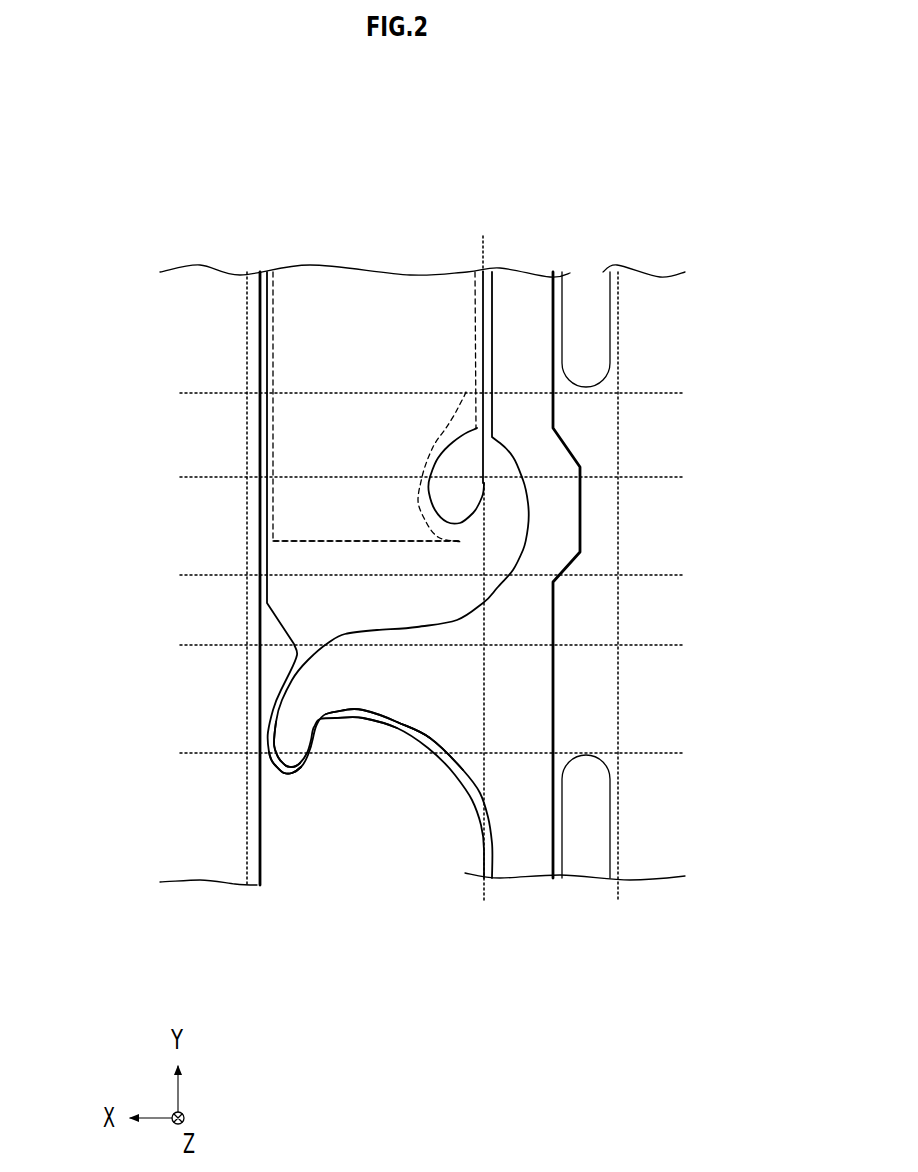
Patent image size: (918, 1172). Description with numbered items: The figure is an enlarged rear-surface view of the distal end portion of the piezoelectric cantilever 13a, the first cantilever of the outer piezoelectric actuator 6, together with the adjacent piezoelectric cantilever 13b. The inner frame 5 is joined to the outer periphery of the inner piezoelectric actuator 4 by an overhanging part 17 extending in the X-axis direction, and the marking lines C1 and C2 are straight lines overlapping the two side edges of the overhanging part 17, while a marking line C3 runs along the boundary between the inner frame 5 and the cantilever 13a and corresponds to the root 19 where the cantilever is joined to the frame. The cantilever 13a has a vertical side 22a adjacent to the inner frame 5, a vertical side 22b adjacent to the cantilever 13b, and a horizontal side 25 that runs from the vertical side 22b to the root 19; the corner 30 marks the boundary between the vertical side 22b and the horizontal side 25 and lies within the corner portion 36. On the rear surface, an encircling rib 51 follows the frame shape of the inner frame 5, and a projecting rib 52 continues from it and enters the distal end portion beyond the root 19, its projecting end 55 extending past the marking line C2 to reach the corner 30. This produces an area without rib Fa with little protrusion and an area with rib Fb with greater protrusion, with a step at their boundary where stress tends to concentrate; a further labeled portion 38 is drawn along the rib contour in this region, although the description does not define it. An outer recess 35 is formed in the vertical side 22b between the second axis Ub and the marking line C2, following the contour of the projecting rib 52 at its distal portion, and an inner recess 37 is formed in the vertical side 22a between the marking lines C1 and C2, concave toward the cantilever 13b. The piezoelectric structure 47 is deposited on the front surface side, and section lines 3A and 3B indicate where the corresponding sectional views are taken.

The piezoelectric cantilever 13a is at (327, 254).
The piezoelectric cantilever 13b is at (190, 254).
The piezoelectric structure 47 is at (290, 280).
The vertical side 22a is at (469, 384).
The vertical side 22b is at (256, 437).
The inner frame 5 is at (542, 261).
The inner piezoelectric actuator 4 is at (647, 261).
The marking line C1 is at (663, 393).
The inner recess 37 is at (430, 477).
The section line 3A is at (428, 478).
The area without rib Fa is at (343, 583).
The second axis Ub is at (660, 575).
The outer recess 35 is at (296, 646).
The section line 3B is at (428, 647).
The marking line C3 is at (488, 680).
The marking line C2 is at (660, 752).
The projecting end 55 is at (280, 768).
The projecting rib 52 is at (388, 703).
The horizontal side 25 is at (431, 742).
The area with rib Fb is at (363, 676).
The passage wall 38 is at (400, 686).
The root 19 is at (493, 708).
The encircling rib 51 is at (532, 842).
The overhanging part 17 is at (580, 705).
The corner portion 36 is at (285, 774).
The corner 30 is at (290, 774).
The outer piezoelectric actuator 6 is at (189, 898).